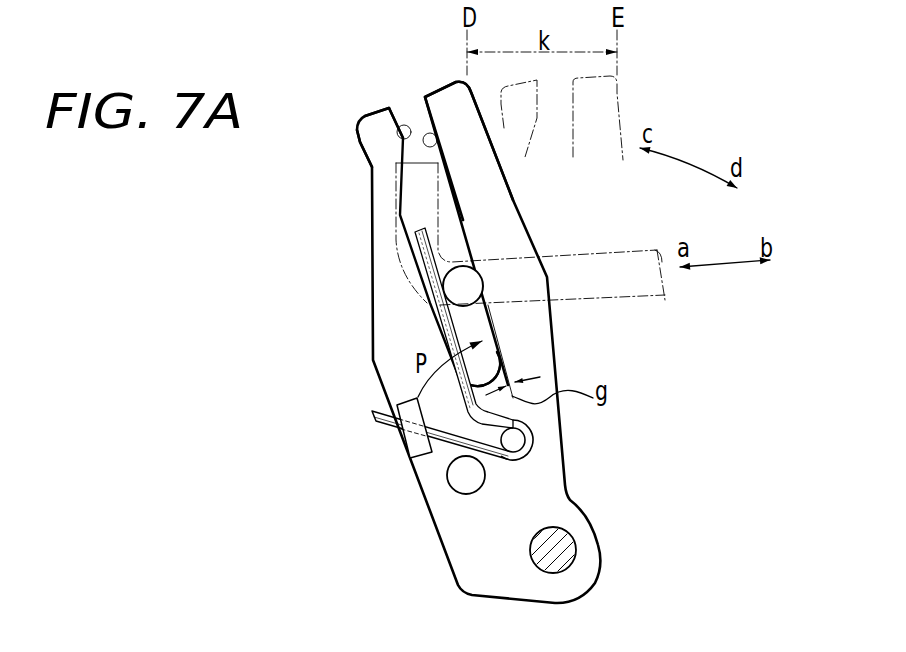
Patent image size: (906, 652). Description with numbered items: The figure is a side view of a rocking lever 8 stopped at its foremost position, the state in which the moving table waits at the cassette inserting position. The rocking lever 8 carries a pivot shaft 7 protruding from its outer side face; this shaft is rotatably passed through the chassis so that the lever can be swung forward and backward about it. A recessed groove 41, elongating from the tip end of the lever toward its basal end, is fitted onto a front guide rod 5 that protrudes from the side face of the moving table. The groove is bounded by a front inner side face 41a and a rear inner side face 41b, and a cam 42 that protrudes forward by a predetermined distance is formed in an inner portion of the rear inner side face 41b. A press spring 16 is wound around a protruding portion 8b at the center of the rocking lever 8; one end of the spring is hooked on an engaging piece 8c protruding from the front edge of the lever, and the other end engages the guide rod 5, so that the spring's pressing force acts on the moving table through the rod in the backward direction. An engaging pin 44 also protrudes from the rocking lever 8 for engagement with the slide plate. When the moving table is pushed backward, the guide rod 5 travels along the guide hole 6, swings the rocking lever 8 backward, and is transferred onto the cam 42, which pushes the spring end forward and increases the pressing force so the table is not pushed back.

The guide rod 5 is at (474, 283).
The guide hole 6 is at (626, 291).
The pivot shaft 7 is at (570, 547).
The rocking lever 8 is at (372, 310).
The protruding portion 8b is at (516, 440).
The engaging piece 8c is at (410, 447).
The press spring 16 is at (417, 245).
The recessed groove 41 is at (431, 120).
The front inner side face 41a is at (403, 140).
The rear inner side face 41b is at (430, 143).
The cam 42 is at (492, 323).
The engaging pin 44 is at (463, 487).